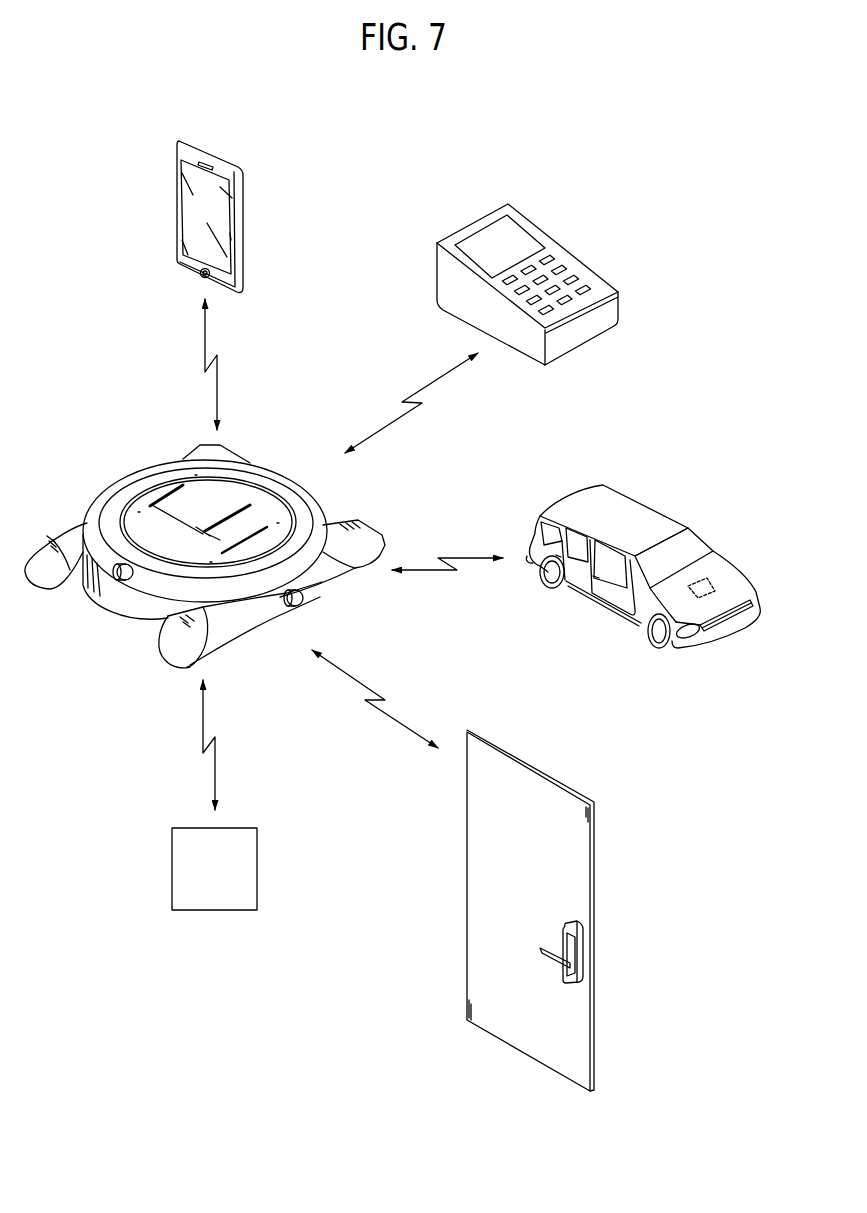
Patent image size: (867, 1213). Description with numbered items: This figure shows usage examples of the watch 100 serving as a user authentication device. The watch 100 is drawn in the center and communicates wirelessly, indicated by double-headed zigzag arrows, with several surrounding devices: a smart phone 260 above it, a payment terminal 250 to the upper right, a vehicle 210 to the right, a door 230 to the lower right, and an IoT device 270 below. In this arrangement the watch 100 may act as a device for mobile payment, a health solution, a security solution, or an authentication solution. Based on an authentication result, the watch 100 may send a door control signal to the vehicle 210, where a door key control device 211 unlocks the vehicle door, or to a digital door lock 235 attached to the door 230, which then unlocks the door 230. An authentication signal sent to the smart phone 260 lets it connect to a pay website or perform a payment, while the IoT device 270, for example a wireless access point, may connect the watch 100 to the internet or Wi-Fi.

The watch 100 is at (127, 448).
The smart phone 260 is at (212, 152).
The payment terminal 250 is at (567, 243).
The vehicle 210 is at (650, 501).
The door key control device 211 is at (713, 578).
The door 230 is at (582, 875).
The digital door lock 235 is at (580, 951).
The IoT device 270 is at (212, 912).